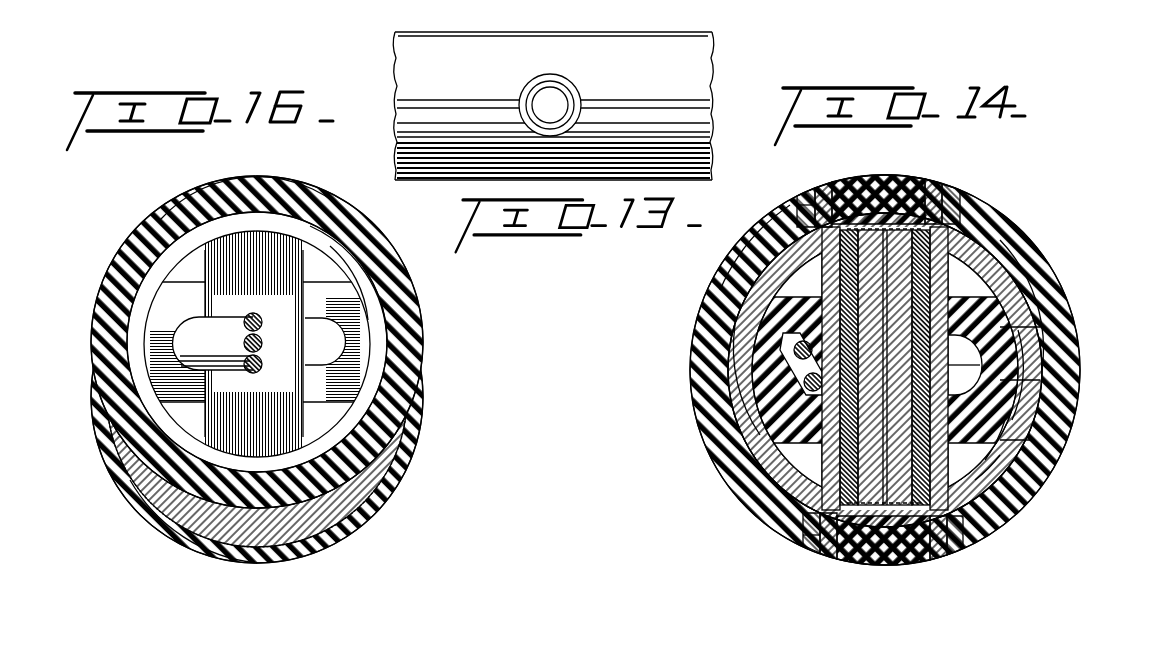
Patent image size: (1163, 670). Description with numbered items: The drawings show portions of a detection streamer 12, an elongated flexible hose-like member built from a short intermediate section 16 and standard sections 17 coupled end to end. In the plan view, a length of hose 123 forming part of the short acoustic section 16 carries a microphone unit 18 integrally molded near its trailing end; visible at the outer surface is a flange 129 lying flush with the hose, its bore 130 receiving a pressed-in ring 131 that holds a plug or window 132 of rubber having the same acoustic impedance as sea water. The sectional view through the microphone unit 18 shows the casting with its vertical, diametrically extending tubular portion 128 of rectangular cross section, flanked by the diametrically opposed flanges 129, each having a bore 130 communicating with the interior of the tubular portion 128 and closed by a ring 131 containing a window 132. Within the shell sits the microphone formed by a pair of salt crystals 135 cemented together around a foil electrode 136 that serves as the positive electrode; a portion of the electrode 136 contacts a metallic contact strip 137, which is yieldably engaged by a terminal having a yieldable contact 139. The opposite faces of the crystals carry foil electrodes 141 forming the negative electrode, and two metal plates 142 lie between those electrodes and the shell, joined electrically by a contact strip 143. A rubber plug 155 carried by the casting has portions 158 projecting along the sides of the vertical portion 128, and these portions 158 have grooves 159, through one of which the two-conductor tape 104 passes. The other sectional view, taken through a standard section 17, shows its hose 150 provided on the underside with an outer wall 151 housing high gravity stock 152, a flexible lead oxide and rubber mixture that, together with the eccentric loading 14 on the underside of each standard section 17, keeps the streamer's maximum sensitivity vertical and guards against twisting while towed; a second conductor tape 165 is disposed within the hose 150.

In FIG. 16, the detection streamer 12 is at (288, 179).
In FIG. 13, the detection streamer 12 is at (391, 37).
In FIG. 14, the detection streamer 12 is at (1045, 258).
In FIG. 16, the eccentric loading 14 is at (388, 499).
In FIG. 13, the short intermediate section 16 is at (429, 32).
In FIG. 14, the short intermediate section 16 is at (1063, 303).
In FIG. 16, the standard section 17 is at (146, 222).
In FIG. 16, the microphone unit 18 is at (346, 256).
In FIG. 13, the microphone unit 18 is at (583, 95).
In FIG. 14, the microphone unit 18 is at (805, 188).
In FIG. 14, the conductor tape 104 is at (748, 343).
In FIG. 13, the hose 123 is at (673, 40).
In FIG. 14, the hose 123 is at (746, 262).
In FIG. 16, the tubular portion 128 is at (254, 344).
In FIG. 14, the tubular portion 128 is at (1037, 482).
In FIG. 14, the flange 129 is at (952, 192).
In FIG. 13, the bore 130 is at (569, 80).
In FIG. 14, the bore 130 is at (818, 186).
In FIG. 13, the ring 131 is at (538, 83).
In FIG. 14, the ring 131 is at (935, 180).
In FIG. 13, the plug or window 132 is at (545, 103).
In FIG. 14, the plug or window 132 is at (887, 178).
In FIG. 14, the salt crystals 135 is at (893, 350).
In FIG. 14, the electrode 136 is at (880, 371).
In FIG. 14, the contact strip 137 is at (801, 537).
In FIG. 14, the yieldable contact 139 is at (801, 370).
In FIG. 14, the electrodes 141 is at (893, 272).
In FIG. 14, the plates 142 is at (920, 447).
In FIG. 14, the contact strip 143 is at (800, 194).
In FIG. 16, the hose 150 is at (232, 177).
In FIG. 16, the outer wall 151 is at (168, 530).
In FIG. 16, the high gravity stock 152 is at (355, 530).
In FIG. 16, the rubber plug 155 is at (362, 368).
In FIG. 14, the rubber plug 155 is at (1072, 320).
In FIG. 16, the portions 158 is at (232, 377).
In FIG. 14, the portions 158 is at (1072, 432).
In FIG. 16, the grooves 159 is at (182, 330).
In FIG. 14, the grooves 159 is at (750, 368).
In FIG. 16, the second conductor tape 165 is at (218, 343).